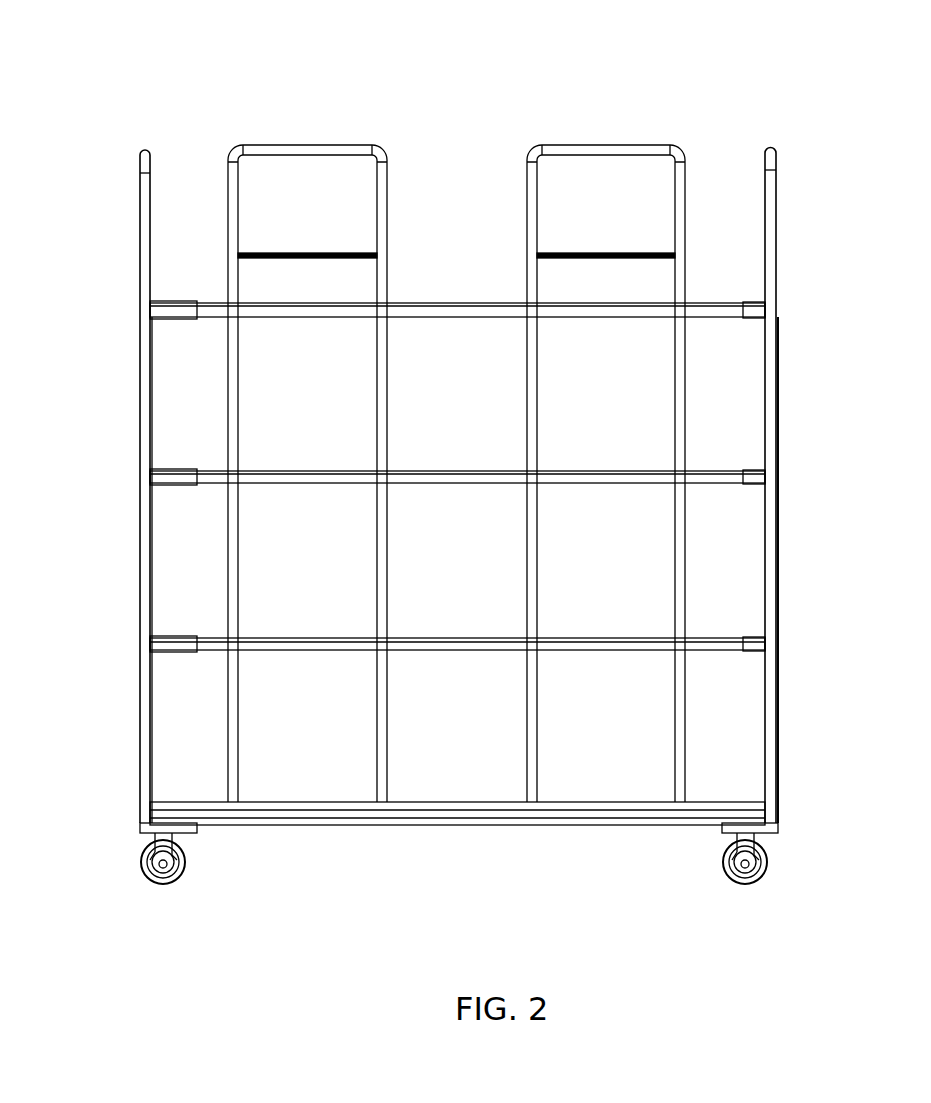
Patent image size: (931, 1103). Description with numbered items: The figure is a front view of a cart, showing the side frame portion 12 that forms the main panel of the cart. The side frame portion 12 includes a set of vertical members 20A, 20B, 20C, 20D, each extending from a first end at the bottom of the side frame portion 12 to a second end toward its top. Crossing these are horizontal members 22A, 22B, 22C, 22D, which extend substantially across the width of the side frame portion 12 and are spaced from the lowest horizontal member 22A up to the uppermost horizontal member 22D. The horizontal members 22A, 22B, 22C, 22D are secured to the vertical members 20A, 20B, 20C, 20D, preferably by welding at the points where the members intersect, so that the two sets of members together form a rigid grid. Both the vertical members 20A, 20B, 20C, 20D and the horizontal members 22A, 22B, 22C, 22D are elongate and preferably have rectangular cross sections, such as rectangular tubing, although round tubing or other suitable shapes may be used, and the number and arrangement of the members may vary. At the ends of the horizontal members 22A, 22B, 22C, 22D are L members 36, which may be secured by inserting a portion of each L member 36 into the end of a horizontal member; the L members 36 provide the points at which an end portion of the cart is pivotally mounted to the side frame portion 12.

The side frame portion 12 is at (472, 224).
The L member 36 is at (183, 301).
The vertical member 20A is at (228, 393).
The vertical member 20B is at (377, 392).
The vertical member 20C is at (527, 408).
The vertical member 20D is at (675, 395).
The horizontal member 22A is at (315, 802).
The horizontal member 22B is at (315, 637).
The horizontal member 22C is at (315, 470).
The horizontal member 22D is at (440, 302).